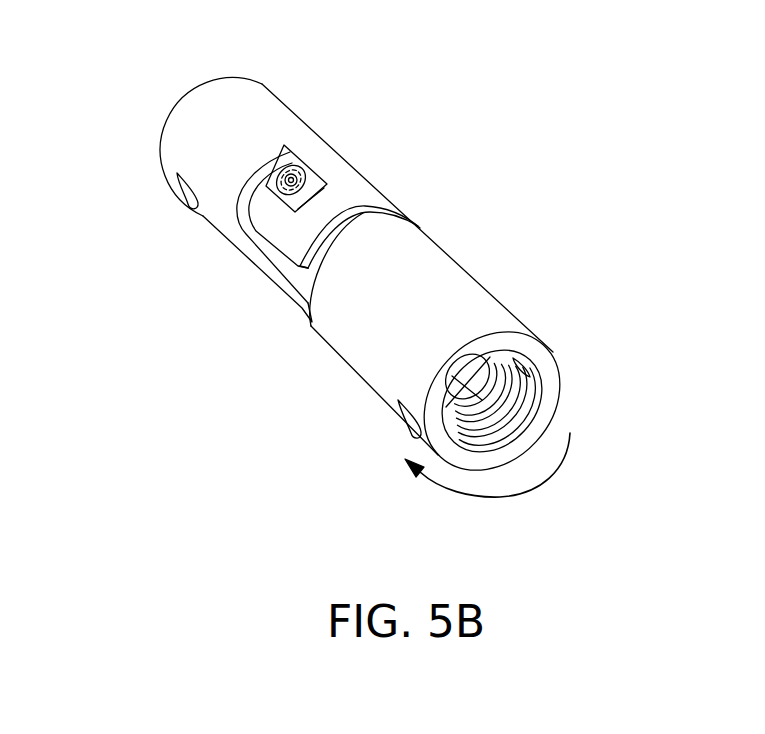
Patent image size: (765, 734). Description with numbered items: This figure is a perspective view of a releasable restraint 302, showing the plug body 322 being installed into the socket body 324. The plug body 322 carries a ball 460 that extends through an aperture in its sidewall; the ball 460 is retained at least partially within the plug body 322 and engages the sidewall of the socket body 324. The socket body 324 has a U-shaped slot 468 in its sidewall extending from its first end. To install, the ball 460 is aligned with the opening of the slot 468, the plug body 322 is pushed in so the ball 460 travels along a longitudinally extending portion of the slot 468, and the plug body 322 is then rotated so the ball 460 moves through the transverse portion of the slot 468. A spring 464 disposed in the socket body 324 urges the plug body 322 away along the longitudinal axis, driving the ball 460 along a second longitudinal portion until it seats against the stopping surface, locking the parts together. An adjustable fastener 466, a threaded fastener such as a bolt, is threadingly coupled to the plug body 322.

The releasable restraint 302 is at (491, 178).
The plug body 322 is at (500, 322).
The socket body 324 is at (266, 92).
The ball 460 is at (315, 163).
The spring 464 is at (232, 222).
The adjustable fastener 466 is at (493, 382).
The slot 468 is at (292, 150).